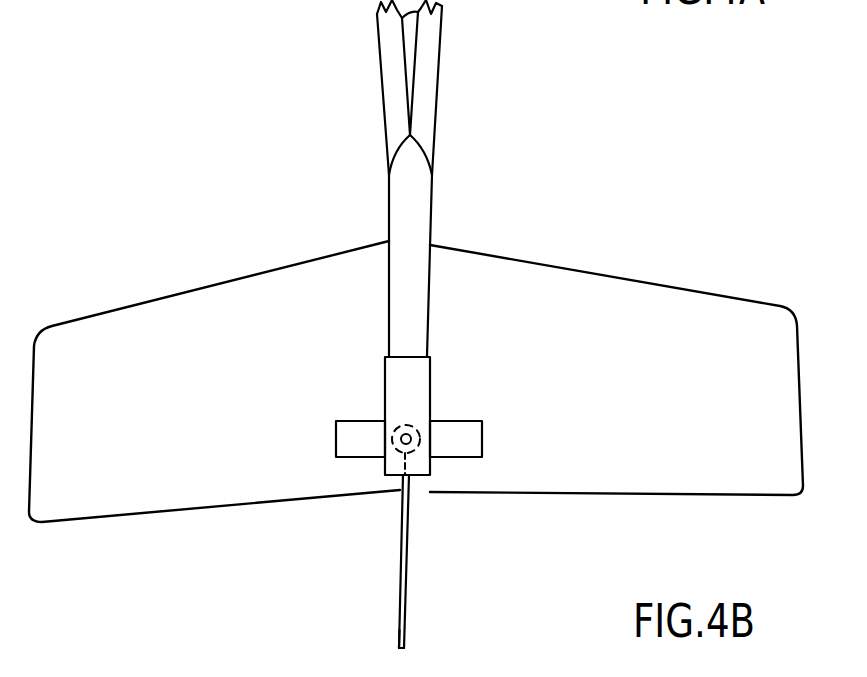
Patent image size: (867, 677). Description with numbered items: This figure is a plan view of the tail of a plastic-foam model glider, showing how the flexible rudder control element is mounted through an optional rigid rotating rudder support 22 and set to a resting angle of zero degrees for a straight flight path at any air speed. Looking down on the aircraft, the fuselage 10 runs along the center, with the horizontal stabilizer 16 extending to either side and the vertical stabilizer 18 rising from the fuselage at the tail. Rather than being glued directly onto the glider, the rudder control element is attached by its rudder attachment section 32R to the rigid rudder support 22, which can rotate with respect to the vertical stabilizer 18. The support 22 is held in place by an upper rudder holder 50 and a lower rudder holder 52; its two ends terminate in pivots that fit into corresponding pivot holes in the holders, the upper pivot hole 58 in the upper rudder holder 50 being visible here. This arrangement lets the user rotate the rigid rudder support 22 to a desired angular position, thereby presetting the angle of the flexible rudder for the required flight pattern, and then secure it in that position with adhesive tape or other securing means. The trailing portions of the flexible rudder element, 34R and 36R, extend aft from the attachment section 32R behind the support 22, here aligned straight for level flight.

The fuselage 10 is at (440, 74).
The vertical stabilizer 18 is at (433, 210).
The horizontal stabilizer 16 is at (238, 280).
The upper rudder holder 50 is at (432, 366).
The lower rudder holder 52 is at (347, 458).
The rigid rotating rudder support 22 is at (400, 424).
The upper pivot hole 58 is at (418, 436).
The rudder attachment section 32R is at (405, 462).
The right control rod 34R is at (401, 530).
The right control rod end 36R is at (405, 632).